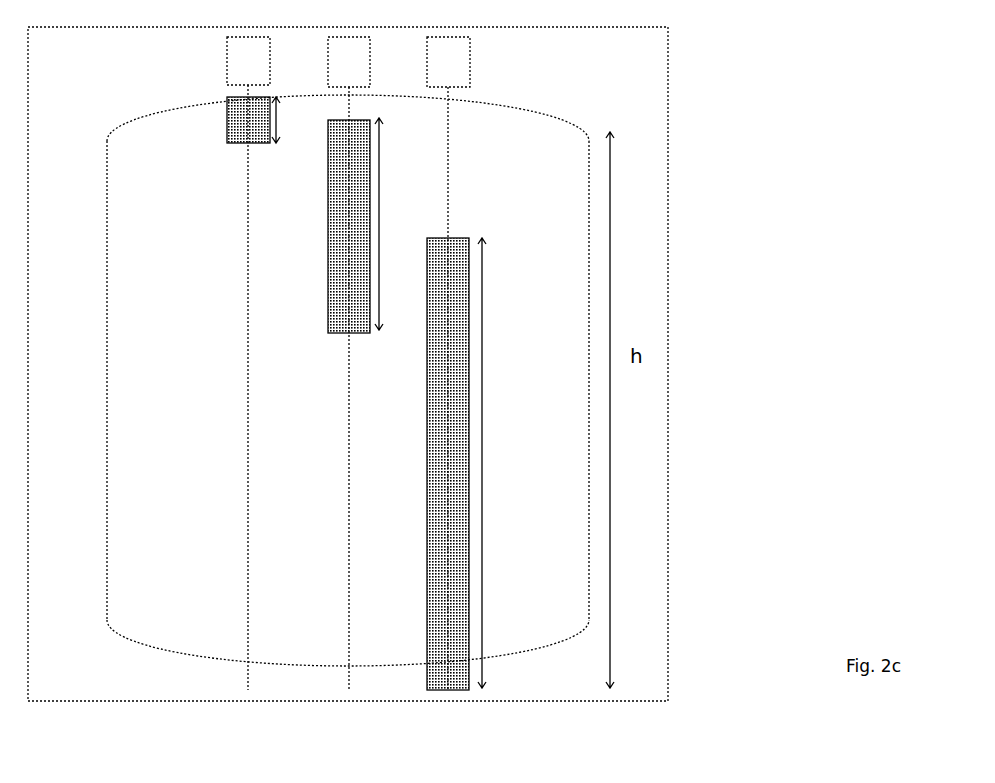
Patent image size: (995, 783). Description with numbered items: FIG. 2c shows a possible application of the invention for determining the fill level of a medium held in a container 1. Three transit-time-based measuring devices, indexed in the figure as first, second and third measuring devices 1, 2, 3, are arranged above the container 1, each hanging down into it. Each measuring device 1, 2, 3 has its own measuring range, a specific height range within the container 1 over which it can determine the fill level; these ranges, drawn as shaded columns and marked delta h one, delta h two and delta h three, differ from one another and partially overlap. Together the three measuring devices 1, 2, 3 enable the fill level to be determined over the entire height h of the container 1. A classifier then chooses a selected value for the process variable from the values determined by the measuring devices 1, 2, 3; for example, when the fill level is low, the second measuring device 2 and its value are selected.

The container 1 is at (377, 363).
The sensor M2 with measured level difference Δh2 2 is at (477, 363).
The sensor M3 with measured level difference Δh3 3 is at (273, 363).